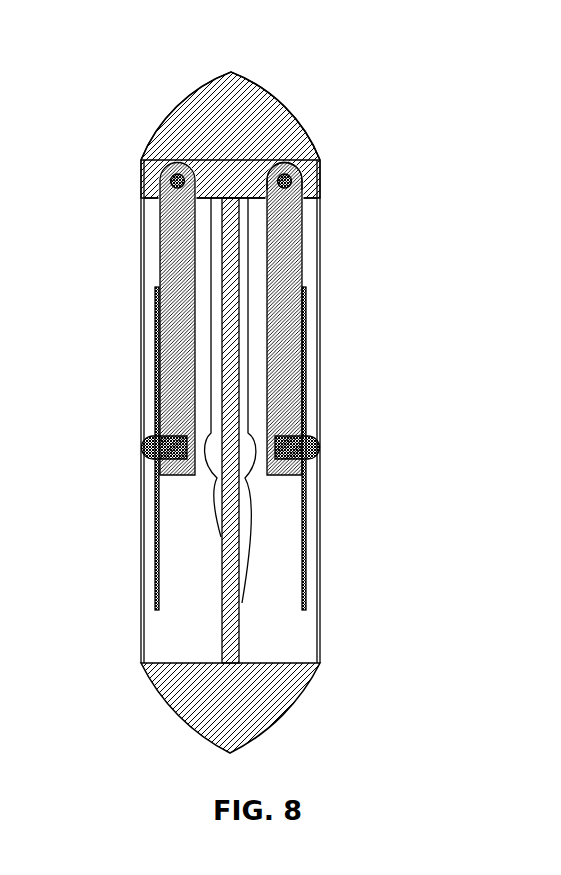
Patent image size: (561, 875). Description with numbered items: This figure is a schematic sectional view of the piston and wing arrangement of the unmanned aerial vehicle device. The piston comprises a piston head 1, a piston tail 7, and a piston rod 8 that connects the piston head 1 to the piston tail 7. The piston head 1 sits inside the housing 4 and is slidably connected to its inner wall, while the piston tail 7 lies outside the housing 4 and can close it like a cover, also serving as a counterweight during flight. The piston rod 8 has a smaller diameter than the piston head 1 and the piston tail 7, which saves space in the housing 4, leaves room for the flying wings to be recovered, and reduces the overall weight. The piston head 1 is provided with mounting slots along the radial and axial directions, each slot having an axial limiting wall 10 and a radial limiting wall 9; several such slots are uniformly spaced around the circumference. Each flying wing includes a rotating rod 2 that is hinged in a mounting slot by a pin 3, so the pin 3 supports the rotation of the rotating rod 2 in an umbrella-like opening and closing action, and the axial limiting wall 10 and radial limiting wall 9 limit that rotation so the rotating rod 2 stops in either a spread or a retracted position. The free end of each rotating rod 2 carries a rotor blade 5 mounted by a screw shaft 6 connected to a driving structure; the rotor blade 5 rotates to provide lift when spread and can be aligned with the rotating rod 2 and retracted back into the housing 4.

The piston head 1 is at (280, 100).
The rotating rod 2 is at (300, 248).
The pin 3 is at (303, 173).
The housing 4 is at (140, 302).
The rotor blade 5 is at (307, 558).
The screw shaft 6 is at (320, 432).
The piston tail 7 is at (230, 697).
The piston rod 8 is at (225, 612).
The radial limiting wall 9 is at (150, 158).
The axial limiting wall 10 is at (197, 183).